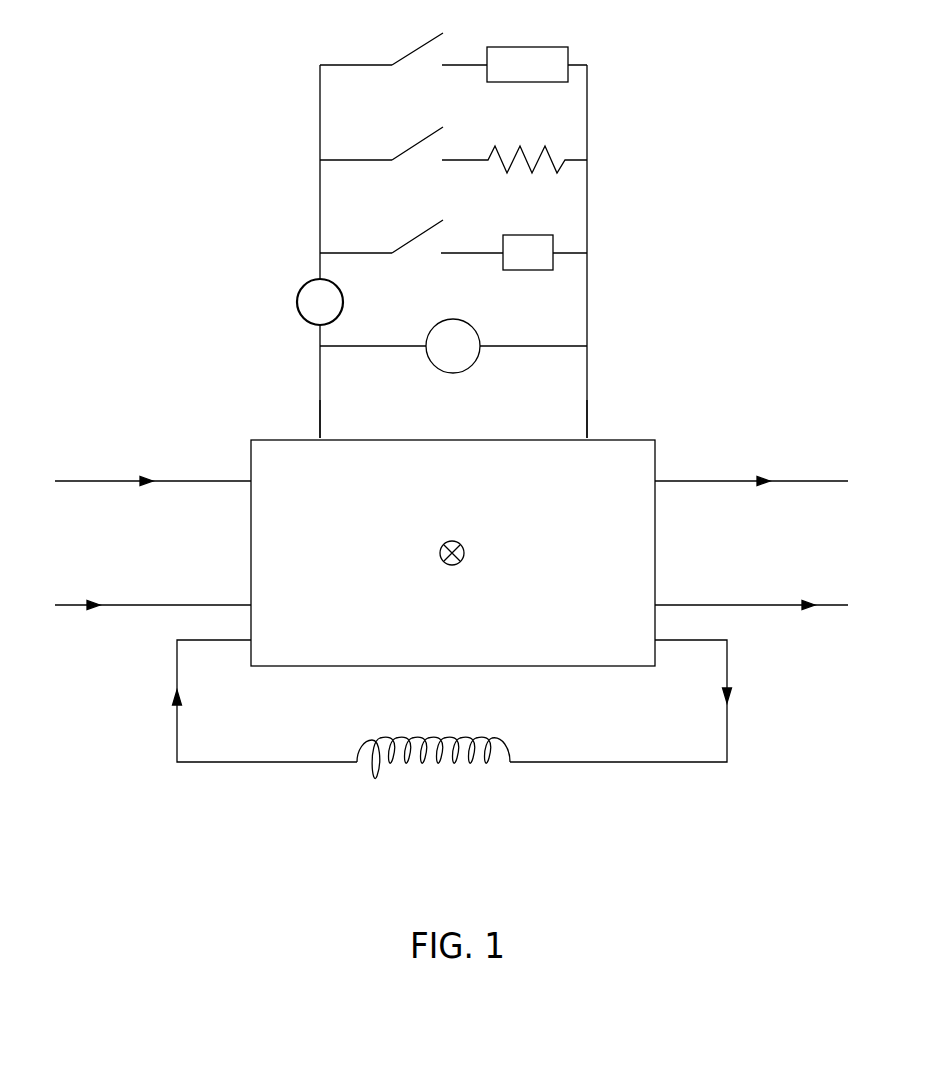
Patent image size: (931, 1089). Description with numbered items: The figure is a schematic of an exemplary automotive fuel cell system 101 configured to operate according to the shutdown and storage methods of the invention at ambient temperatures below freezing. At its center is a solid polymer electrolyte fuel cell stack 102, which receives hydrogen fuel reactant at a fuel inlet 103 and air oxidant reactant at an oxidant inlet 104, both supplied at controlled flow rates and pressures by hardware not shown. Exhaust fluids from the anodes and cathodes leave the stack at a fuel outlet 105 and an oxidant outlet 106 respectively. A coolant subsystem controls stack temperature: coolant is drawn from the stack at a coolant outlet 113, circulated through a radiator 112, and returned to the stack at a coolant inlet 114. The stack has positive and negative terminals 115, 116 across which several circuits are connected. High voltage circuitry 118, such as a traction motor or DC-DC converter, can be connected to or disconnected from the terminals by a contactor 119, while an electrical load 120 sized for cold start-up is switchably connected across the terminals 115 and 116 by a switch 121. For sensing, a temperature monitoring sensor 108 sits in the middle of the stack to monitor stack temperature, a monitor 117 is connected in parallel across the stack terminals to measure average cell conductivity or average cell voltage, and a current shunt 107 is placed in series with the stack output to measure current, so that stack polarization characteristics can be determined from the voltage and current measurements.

The fuel cell system 101 is at (712, 135).
The solid polymer electrolyte fuel cell stack 102 is at (442, 653).
The fuel inlet 103 is at (251, 480).
The oxidant inlet 104 is at (251, 604).
The fuel outlet 105 is at (655, 480).
The oxidant outlet 106 is at (655, 604).
The current shunt 107 is at (302, 318).
The temperature monitoring sensor 108 is at (465, 553).
The radiator 112 is at (422, 777).
The coolant outlet 113 is at (657, 643).
The coolant inlet 114 is at (245, 643).
The positive terminal 115 is at (322, 436).
The negative terminal 116 is at (585, 436).
The monitor 117 is at (461, 372).
The high voltage circuitry 118 is at (528, 236).
The contactor 119 is at (417, 237).
The electrical load 120 is at (521, 150).
The switch 121 is at (417, 144).